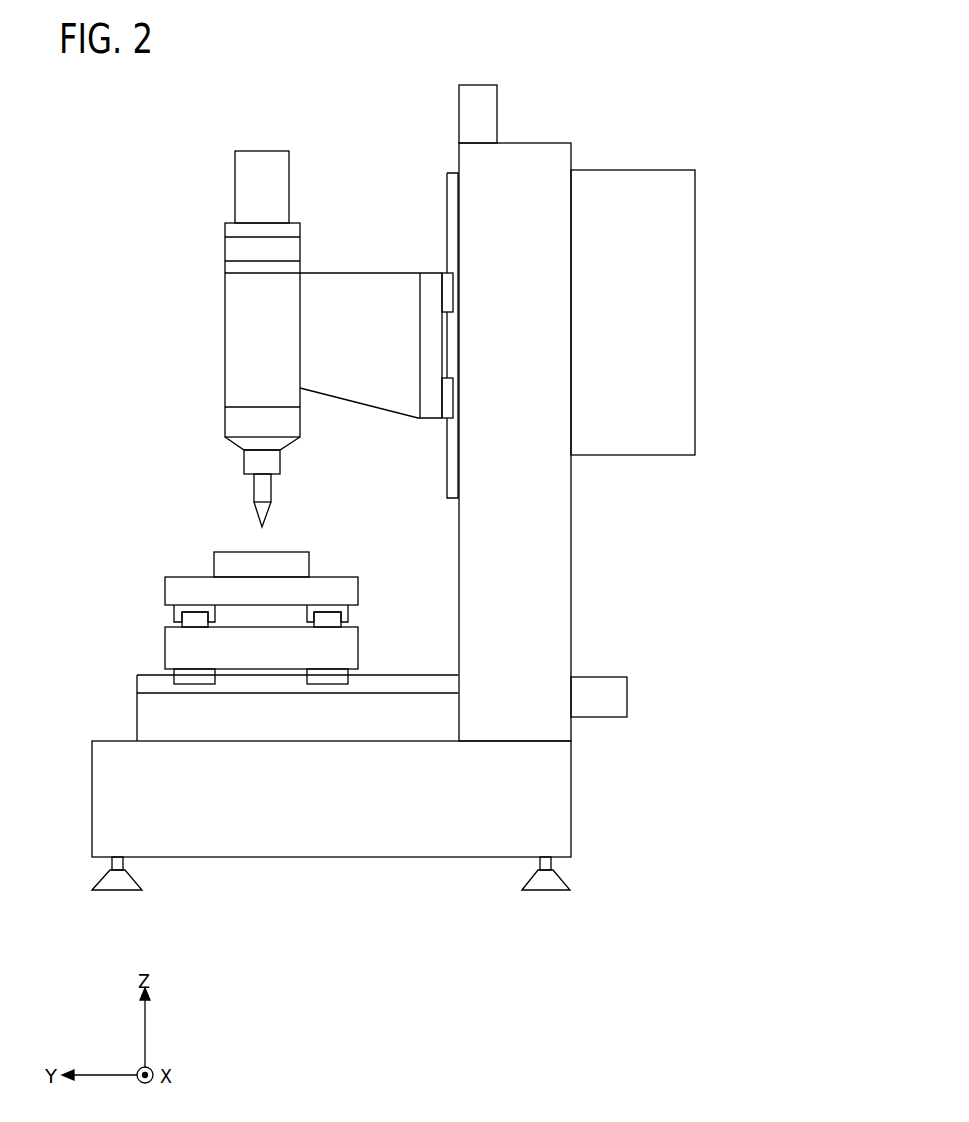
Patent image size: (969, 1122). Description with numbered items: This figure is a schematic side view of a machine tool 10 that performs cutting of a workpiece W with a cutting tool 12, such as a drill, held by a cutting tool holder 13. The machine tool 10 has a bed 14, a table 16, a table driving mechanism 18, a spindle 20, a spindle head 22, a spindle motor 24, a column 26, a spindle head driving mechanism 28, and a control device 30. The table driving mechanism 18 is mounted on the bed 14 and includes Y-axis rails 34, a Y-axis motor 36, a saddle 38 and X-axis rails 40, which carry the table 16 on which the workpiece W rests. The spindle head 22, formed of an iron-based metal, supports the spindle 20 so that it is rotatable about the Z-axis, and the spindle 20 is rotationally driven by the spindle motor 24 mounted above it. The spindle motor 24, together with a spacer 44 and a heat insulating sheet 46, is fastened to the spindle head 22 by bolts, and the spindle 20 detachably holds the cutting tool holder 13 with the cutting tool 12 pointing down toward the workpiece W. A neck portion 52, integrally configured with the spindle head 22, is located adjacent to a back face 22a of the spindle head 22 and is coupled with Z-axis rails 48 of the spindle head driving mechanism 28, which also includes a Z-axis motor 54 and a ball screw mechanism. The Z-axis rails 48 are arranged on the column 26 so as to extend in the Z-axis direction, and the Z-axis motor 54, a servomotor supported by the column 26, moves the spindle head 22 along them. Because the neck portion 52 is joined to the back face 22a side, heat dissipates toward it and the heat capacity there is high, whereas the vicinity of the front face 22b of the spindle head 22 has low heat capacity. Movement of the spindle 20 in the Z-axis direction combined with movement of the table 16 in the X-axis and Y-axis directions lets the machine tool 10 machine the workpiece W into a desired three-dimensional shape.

The machine tool 10 is at (615, 104).
The cutting tool 12 is at (262, 487).
The cutting tool holder 13 is at (250, 458).
The bed 14 is at (348, 833).
The table 16 is at (165, 588).
The table driving mechanism 18 is at (100, 592).
The spindle 20 is at (248, 420).
The spindle head 22 is at (232, 302).
The back face 22a is at (302, 338).
The front face 22b is at (225, 343).
The spindle motor 24 is at (262, 162).
The column 26 is at (543, 566).
The spindle head driving mechanism 28 is at (428, 458).
The control device 30 is at (668, 297).
The Y-axis rails 34 is at (145, 686).
The Y-axis motor 36 is at (612, 697).
The saddle 38 is at (180, 650).
The X-axis rails 40 is at (188, 620).
The spacer 44 is at (232, 247).
The heat insulating sheet 46 is at (235, 265).
The Z-axis rails 48 is at (446, 195).
The neck portion 52 is at (348, 288).
The Z-axis motor 54 is at (473, 100).
The workpiece W is at (240, 565).